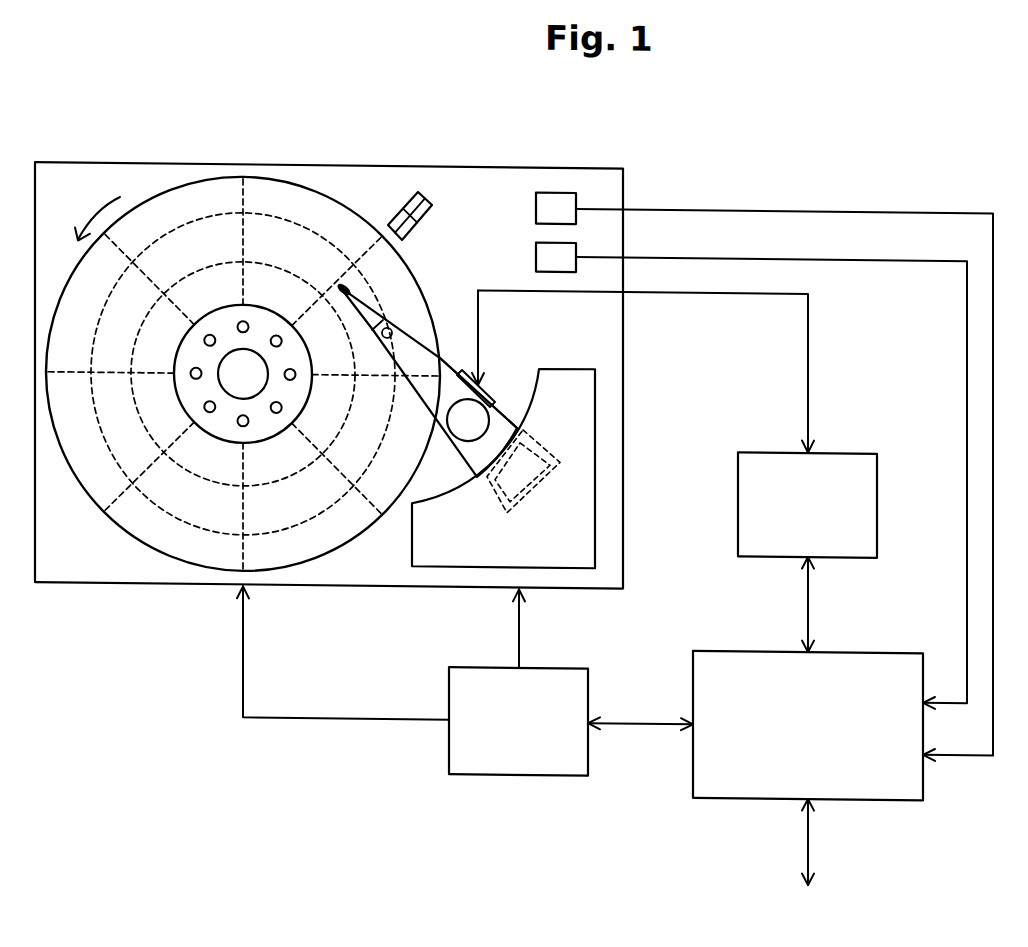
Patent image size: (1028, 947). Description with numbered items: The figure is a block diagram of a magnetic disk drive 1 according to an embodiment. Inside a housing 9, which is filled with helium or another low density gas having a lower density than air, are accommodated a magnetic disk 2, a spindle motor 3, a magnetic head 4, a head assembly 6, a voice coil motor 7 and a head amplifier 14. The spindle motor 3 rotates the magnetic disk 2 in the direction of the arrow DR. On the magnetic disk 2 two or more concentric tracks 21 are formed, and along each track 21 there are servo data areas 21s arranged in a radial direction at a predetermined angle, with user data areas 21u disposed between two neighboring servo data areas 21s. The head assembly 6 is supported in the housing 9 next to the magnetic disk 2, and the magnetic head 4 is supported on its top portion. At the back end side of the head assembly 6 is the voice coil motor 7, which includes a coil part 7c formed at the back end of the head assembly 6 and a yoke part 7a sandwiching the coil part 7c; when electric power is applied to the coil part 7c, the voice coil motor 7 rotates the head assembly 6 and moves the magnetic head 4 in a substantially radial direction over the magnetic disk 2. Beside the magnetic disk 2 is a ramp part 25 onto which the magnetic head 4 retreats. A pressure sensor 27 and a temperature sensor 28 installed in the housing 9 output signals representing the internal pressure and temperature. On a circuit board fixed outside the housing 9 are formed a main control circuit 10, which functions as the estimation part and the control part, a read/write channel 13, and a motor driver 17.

The magnetic disk drive 1 is at (743, 153).
The magnetic disk 2 is at (182, 206).
The spindle motor 3 is at (228, 327).
The magnetic head 4 is at (358, 283).
The head assembly 6 is at (443, 371).
The voice coil motor 7 is at (600, 427).
The yoke part 7a is at (503, 508).
The coil part 7c is at (548, 448).
The housing 9 is at (483, 165).
The main control circuit 10 is at (842, 646).
The read/write channel 13 is at (843, 448).
The head amplifier 14 is at (498, 385).
The motor driver 17 is at (550, 666).
The track 21 is at (343, 546).
The servo data area 21s is at (108, 512).
The user data area 21u is at (170, 522).
The ramp part 25 is at (402, 204).
The pressure sensor 27 is at (536, 206).
The temperature sensor 28 is at (536, 254).
The arrow DR is at (97, 214).